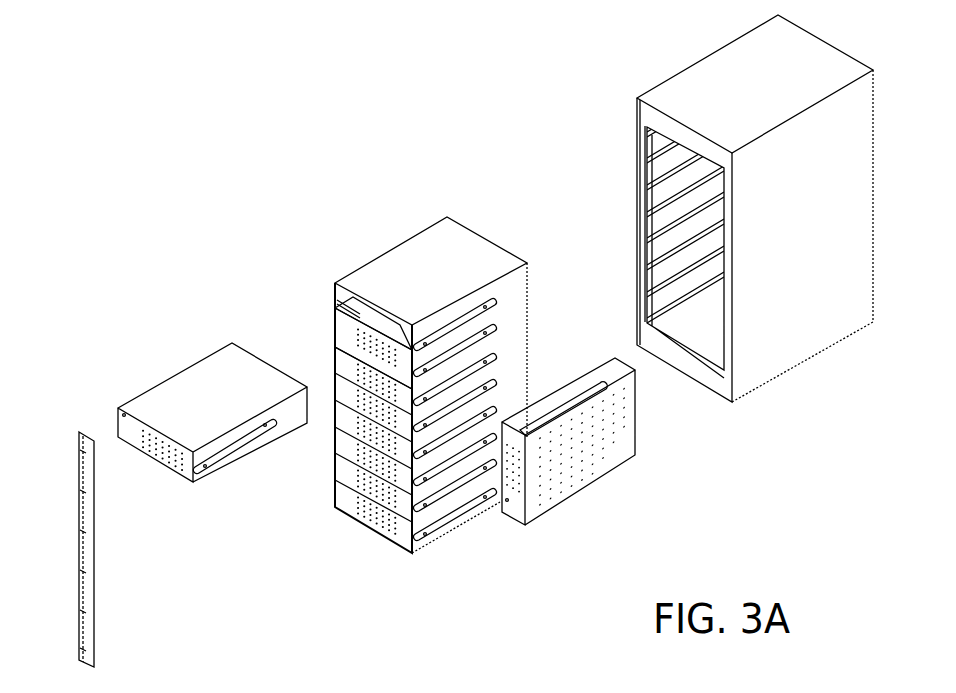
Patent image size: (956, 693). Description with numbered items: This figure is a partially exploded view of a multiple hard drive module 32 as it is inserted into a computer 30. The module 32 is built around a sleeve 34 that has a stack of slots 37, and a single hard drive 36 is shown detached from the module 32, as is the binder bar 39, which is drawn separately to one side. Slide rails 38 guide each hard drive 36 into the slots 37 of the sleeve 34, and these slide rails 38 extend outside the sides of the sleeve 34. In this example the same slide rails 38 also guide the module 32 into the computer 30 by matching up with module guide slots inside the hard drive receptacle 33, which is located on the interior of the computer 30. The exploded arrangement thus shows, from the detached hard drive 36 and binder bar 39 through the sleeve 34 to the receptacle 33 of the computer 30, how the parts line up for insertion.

The computer 30 is at (723, 208).
The module 32 is at (343, 325).
The hard drive receptacle 33 is at (660, 163).
The sleeve 34 is at (404, 356).
The hard drive 36 is at (212, 416).
The slots 37 is at (443, 327).
The slide rails 38 is at (240, 450).
The binder bar 39 is at (95, 607).